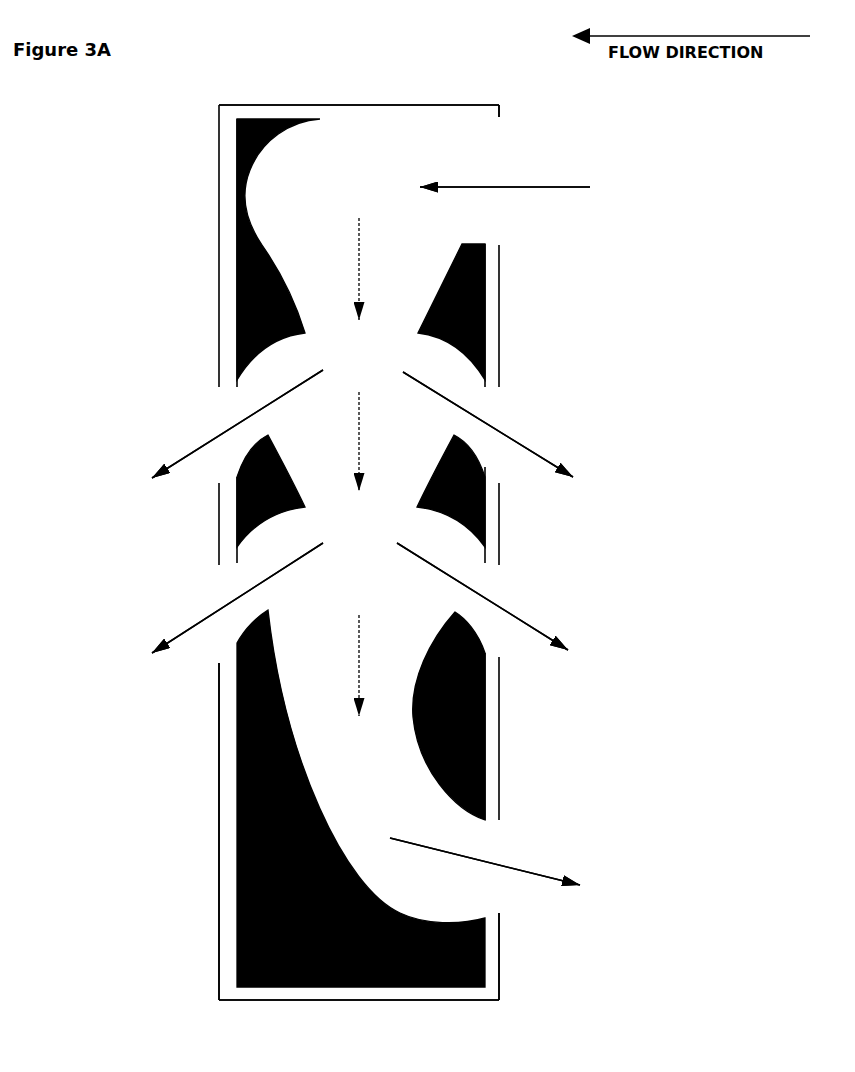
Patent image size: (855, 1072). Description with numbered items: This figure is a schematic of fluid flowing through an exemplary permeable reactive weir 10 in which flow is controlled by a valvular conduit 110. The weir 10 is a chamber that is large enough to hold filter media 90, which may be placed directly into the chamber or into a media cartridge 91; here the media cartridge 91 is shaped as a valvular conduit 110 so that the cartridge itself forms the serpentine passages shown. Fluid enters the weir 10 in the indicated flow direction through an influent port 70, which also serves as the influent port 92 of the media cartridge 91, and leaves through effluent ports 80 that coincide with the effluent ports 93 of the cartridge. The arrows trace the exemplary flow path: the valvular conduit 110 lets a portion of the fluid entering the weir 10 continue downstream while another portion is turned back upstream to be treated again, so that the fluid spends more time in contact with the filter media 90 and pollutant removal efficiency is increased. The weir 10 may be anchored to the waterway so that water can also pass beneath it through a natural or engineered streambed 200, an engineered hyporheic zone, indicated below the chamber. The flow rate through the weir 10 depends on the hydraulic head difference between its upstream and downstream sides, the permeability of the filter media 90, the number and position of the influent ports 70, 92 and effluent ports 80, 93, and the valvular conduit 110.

The permeable reactive weir 10 is at (212, 188).
The media cartridge 91 is at (232, 285).
The filter media 90 is at (358, 157).
The valvular conduit 110 is at (380, 158).
The influent port 70 is at (483, 160).
The influent port 92 is at (537, 150).
The effluent port 80 is at (230, 412).
The effluent port 93 is at (397, 625).
The engineered streambed 200 is at (359, 574).